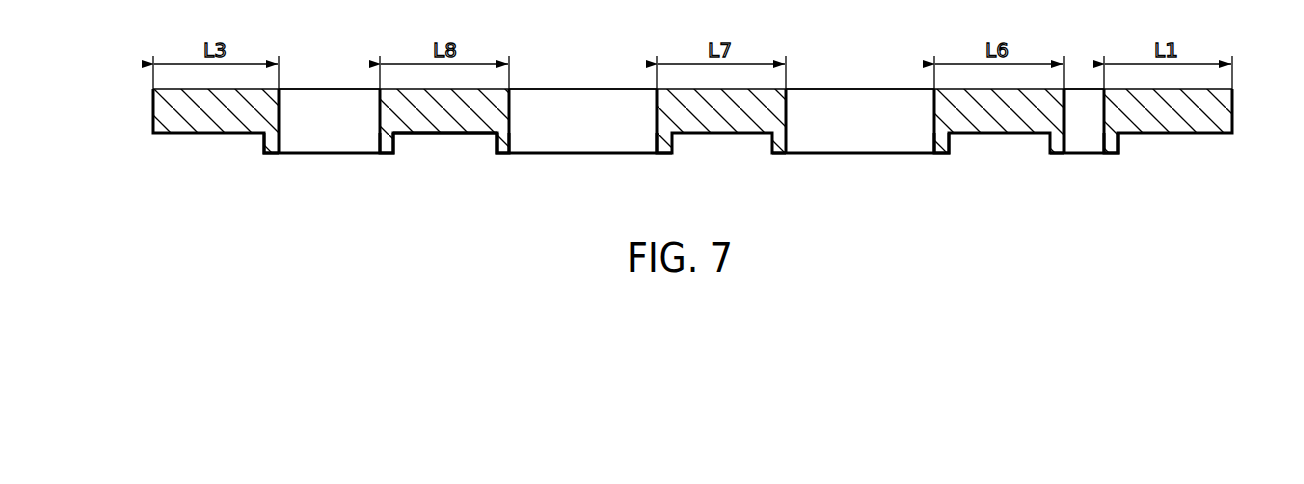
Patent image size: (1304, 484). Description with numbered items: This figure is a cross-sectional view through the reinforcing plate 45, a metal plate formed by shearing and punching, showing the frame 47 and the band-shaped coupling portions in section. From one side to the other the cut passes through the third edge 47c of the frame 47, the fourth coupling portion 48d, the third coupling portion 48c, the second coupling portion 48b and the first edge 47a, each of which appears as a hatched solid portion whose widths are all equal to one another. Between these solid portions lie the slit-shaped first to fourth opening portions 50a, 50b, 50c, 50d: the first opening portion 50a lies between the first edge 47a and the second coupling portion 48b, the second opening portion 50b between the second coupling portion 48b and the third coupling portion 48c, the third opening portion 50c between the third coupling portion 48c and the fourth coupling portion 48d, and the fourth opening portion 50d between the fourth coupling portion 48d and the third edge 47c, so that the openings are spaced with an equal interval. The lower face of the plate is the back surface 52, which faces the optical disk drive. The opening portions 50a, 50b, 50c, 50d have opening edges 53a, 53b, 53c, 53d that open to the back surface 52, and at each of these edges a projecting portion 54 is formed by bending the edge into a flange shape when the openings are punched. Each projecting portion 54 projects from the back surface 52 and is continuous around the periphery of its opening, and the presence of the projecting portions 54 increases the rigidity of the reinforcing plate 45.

The reinforcing plate 45 is at (148, 100).
The frame 47 is at (1233, 106).
The first edge 47a is at (1177, 134).
The third edge 47c is at (220, 129).
The second coupling portion 48b is at (985, 134).
The third coupling portion 48c is at (724, 134).
The fourth coupling portion 48d is at (477, 128).
The first opening portion 50a is at (1083, 96).
The second opening portion 50b is at (860, 96).
The third opening portion 50c is at (583, 96).
The fourth opening portion 50d is at (335, 96).
The back surface 52 is at (441, 135).
The opening edge 53a is at (1102, 136).
The opening edge 53b is at (936, 133).
The opening edge 53c is at (513, 131).
The opening edge 53d is at (381, 131).
The projecting portion 54 is at (274, 149).